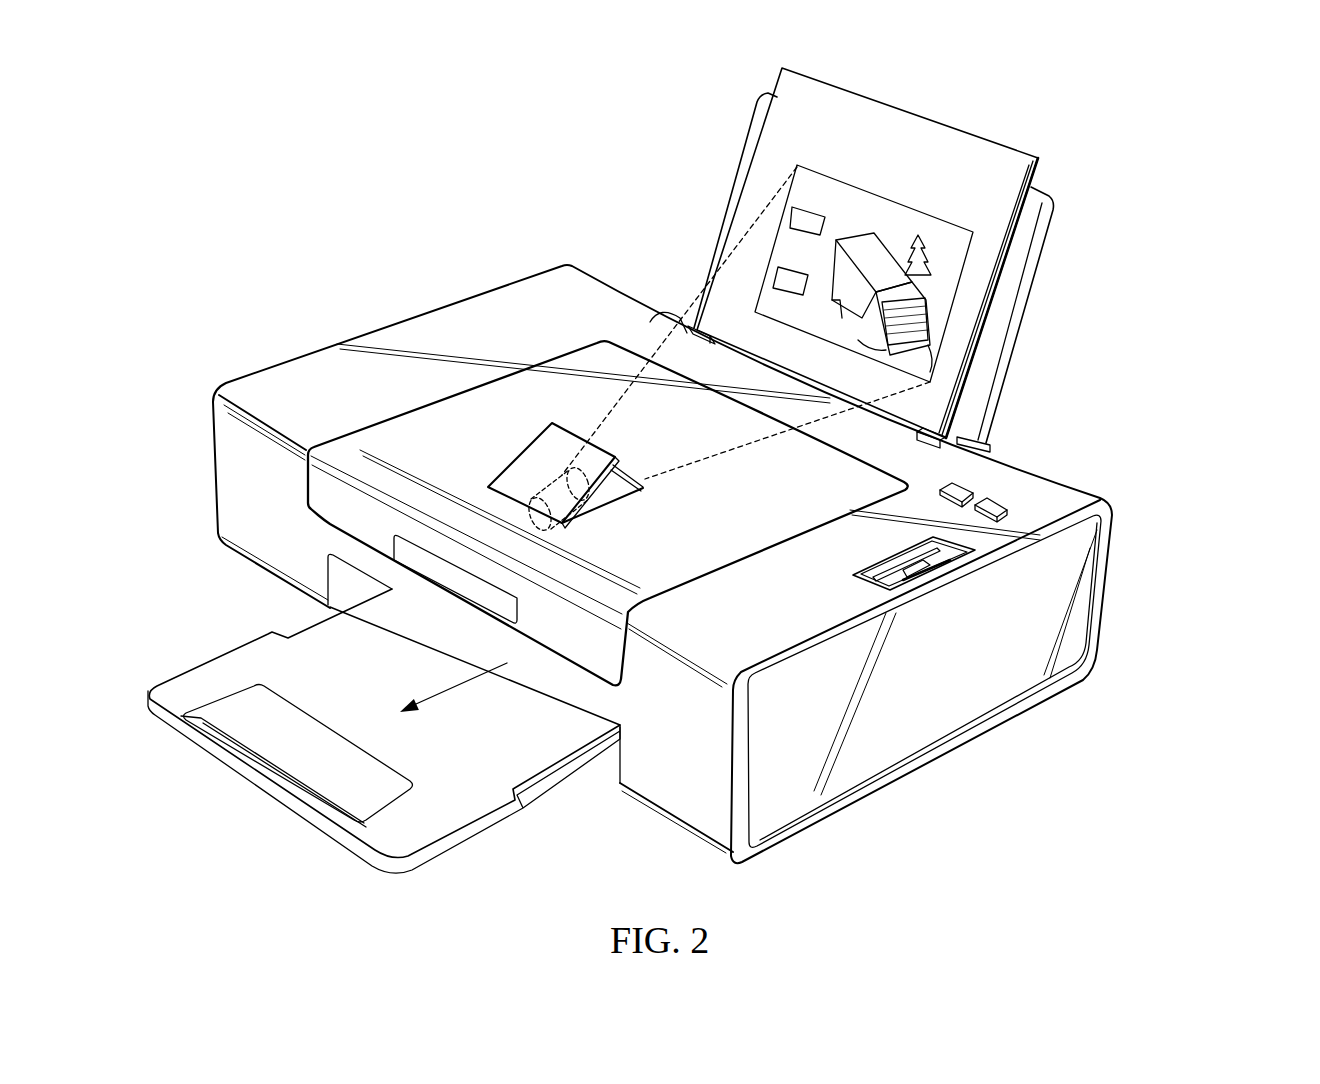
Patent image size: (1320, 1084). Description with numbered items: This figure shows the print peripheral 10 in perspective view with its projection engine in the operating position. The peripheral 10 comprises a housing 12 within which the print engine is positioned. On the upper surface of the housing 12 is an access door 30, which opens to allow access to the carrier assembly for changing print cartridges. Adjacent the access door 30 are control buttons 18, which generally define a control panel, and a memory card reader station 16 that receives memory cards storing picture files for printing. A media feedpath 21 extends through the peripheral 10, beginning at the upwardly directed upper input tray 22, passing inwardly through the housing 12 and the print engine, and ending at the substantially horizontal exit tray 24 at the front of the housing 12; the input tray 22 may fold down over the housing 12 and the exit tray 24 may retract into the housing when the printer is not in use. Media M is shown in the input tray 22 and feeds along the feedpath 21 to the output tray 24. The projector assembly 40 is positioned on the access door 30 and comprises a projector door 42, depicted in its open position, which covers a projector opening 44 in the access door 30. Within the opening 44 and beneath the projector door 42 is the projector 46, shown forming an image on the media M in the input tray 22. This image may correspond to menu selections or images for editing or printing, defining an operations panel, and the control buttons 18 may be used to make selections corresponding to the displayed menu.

The print peripheral 10 is at (332, 200).
The housing 12 is at (1122, 565).
The memory card reader station 16 is at (948, 562).
The control buttons 18 is at (985, 493).
The media feedpath 21 is at (455, 690).
The upper input tray 22 is at (1007, 313).
The exit tray 24 is at (468, 808).
The access door 30 is at (740, 523).
The projector assembly 40 is at (517, 450).
The projector door 42 is at (520, 478).
The projector opening 44 is at (618, 497).
The projector 46 is at (560, 477).
The media M is at (1000, 157).